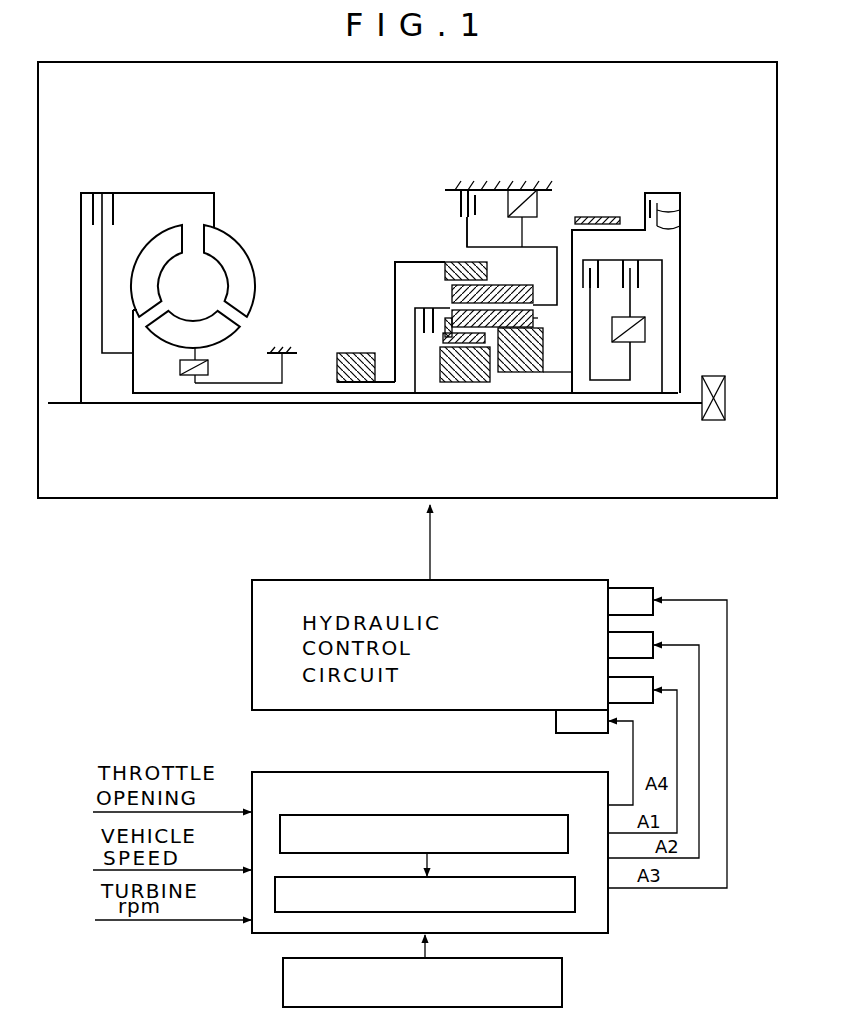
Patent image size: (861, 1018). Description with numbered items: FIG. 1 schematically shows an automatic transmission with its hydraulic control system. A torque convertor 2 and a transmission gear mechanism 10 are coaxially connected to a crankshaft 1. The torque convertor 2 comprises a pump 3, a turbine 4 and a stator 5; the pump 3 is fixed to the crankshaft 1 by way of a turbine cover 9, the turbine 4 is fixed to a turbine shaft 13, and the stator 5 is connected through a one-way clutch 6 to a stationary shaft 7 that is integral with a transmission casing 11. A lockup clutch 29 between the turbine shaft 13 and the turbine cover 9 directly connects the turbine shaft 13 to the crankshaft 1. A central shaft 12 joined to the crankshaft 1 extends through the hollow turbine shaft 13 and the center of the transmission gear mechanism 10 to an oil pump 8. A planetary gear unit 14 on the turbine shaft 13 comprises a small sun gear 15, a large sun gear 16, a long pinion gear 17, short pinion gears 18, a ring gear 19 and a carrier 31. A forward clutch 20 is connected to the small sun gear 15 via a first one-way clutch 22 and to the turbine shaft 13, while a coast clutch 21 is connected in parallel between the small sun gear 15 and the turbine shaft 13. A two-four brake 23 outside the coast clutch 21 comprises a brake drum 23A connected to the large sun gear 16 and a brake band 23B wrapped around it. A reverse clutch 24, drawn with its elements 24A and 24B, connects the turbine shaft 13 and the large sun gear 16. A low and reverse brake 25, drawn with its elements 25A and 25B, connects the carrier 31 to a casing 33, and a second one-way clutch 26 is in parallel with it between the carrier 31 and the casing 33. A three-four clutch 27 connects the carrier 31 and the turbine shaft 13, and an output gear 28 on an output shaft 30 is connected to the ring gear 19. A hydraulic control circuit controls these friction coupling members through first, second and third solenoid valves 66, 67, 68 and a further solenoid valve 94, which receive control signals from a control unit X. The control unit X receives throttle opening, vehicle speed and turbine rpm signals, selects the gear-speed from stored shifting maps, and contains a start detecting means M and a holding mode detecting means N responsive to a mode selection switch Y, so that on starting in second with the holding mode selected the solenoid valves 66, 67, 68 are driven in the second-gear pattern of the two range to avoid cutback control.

The crankshaft 1 is at (67, 407).
The torque convertor 2 is at (260, 242).
The pump 3 is at (230, 233).
The turbine 4 is at (157, 235).
The stator 5 is at (217, 337).
The one-way clutch 6 is at (180, 367).
The stationary shaft 7 is at (272, 393).
The oil pump 8 is at (706, 423).
The turbine cover 9 is at (80, 313).
The transmission gear mechanism 10 is at (587, 177).
The transmission casing 11 is at (293, 347).
The central shaft 12 is at (390, 403).
The turbine shaft 13 is at (513, 393).
The planetary gear unit 14 is at (385, 248).
The small sun gear 15 is at (470, 383).
The large sun gear 16 is at (543, 373).
The long pinion gear 17 is at (538, 319).
The short pinion gears 18 is at (443, 335).
The ring gear 19 is at (453, 262).
The forward clutch 20 is at (645, 280).
The coast clutch 21 is at (605, 278).
The first one-way clutch 22 is at (648, 330).
The 2-4 brake 23 is at (667, 122).
The brake drum 23A is at (625, 230).
The brake band 23B is at (593, 215).
The reverse clutch 24 is at (670, 185).
The brake plate 24A is at (680, 205).
The brake hub 24B is at (680, 228).
The low and reverse brake 25 is at (478, 207).
The clutch plate 25A is at (462, 205).
The clutch hub 25B is at (467, 227).
The second one-way clutch 26 is at (540, 200).
The 3-4 clutch 27 is at (408, 320).
The output gear 28 is at (340, 383).
The lockup clutch 29 is at (90, 208).
The output shaft 30 is at (395, 287).
The carrier 31 is at (447, 317).
The casing 33 is at (497, 185).
The first solenoid valve 66 is at (655, 704).
The second solenoid valve 67 is at (654, 650).
The third solenoid valve 68 is at (651, 588).
The solenoid valve 94 is at (601, 736).
The control unit X is at (498, 770).
The mode selection switch Y is at (563, 978).
The start detecting means M is at (584, 826).
The holding mode detecting means N is at (576, 896).